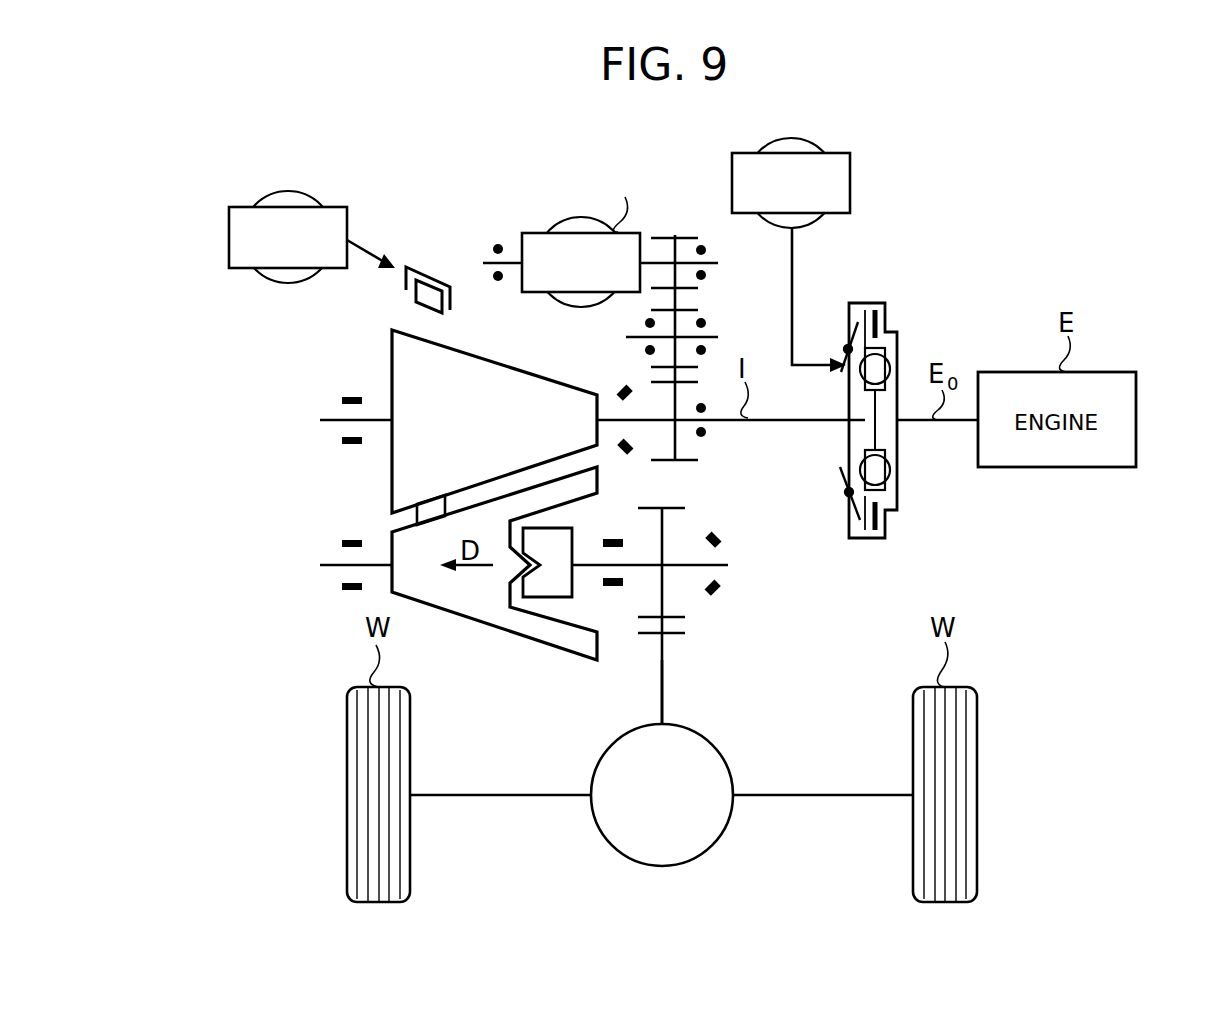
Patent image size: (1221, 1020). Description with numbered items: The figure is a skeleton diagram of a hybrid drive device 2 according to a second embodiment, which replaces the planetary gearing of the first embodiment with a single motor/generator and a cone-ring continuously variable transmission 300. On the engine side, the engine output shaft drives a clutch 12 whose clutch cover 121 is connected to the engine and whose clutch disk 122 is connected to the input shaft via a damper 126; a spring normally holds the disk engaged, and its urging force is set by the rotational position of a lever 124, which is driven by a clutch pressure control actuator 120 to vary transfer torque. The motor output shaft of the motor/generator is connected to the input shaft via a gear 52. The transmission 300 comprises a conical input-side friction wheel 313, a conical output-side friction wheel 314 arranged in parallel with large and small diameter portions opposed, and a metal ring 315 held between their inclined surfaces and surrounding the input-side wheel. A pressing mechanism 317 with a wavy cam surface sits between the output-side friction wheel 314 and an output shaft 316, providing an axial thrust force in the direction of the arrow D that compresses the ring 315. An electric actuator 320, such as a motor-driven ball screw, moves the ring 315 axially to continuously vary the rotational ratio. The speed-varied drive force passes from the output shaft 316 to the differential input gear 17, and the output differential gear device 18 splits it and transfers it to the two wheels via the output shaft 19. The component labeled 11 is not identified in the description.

The hybrid drive device 2 is at (190, 143).
The cone-ring continuously variable transmission 300 is at (296, 411).
The friction wheel (primary cone) 313 is at (415, 375).
The friction wheel (secondary cone) 314 is at (415, 584).
The ring (friction ring) 315 is at (417, 510).
The output shaft 316 is at (680, 568).
The pressing mechanism (cam mechanism) 317 is at (563, 540).
The electric actuator 320 is at (347, 208).
The gear 52 is at (677, 313).
The clutch pressure control actuator 120 is at (850, 154).
The clutch 12 is at (898, 280).
The clutch cover 121 is at (890, 335).
The clutch 11 is at (887, 348).
The damper 126 is at (883, 358).
The lever 124 is at (843, 373).
The clutch disk 122 is at (872, 435).
The differential input gear 17 is at (662, 683).
The output differential gear device 18 is at (688, 862).
The output shaft 19 is at (787, 793).